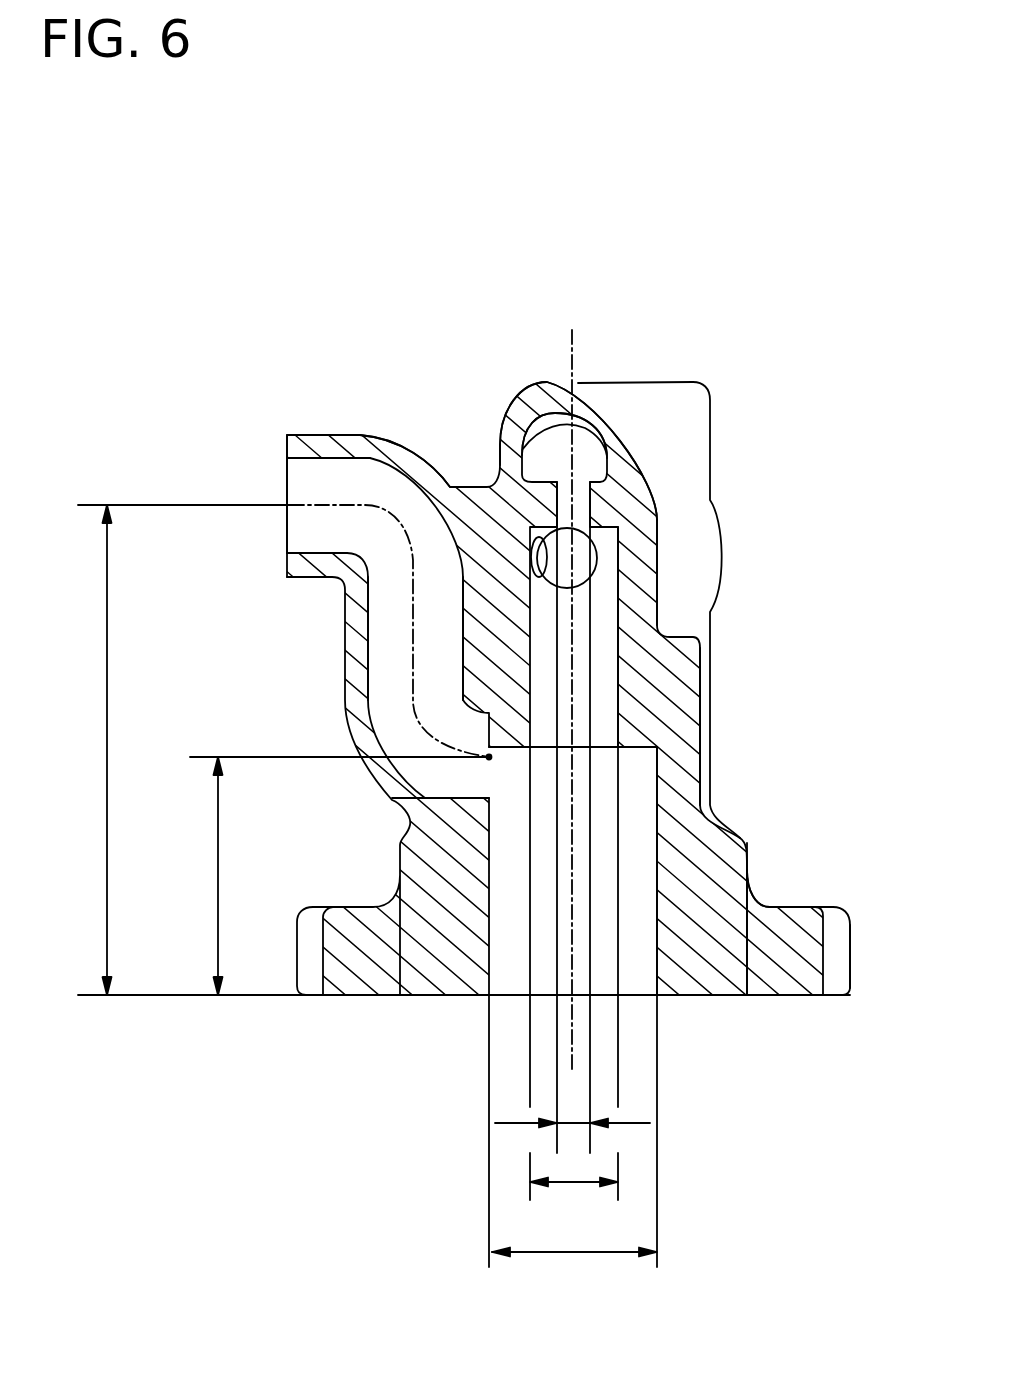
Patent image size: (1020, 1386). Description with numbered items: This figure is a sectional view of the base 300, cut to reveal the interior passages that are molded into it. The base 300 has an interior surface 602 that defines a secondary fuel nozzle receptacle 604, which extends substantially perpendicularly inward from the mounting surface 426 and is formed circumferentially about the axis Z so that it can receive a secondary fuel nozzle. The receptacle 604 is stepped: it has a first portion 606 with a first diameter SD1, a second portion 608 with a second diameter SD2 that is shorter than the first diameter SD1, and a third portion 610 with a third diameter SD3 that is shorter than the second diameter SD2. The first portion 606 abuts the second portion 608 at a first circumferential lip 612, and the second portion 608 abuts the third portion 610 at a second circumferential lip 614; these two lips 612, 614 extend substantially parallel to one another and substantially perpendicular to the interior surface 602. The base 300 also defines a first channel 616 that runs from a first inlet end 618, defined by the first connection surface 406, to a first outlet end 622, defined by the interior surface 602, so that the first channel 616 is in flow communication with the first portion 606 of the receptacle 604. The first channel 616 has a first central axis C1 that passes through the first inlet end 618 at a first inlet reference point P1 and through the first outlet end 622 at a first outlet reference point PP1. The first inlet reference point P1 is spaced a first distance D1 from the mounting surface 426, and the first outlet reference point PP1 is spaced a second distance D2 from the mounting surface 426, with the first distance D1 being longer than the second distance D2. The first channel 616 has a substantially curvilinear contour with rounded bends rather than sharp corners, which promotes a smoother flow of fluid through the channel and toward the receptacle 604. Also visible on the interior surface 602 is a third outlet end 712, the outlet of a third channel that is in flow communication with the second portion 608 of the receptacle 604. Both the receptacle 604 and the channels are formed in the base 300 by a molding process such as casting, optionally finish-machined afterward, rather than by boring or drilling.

The base 300 is at (333, 226).
The first connection surface 406 is at (262, 437).
The mounting surface 426 is at (718, 997).
The interior surface 602 is at (650, 842).
The secondary fuel nozzle receptacle 604 is at (508, 922).
The first portion 606 is at (670, 893).
The second portion 608 is at (632, 652).
The third portion 610 is at (597, 500).
The first circumferential lip 612 is at (640, 758).
The second circumferential lip 614 is at (655, 530).
The first channel 616 is at (382, 648).
The first inlet end 618 is at (275, 540).
The first outlet end 622 is at (475, 779).
The third outlet end 712 is at (584, 578).
The first central axis C1 is at (409, 452).
The first inlet reference point P1 is at (287, 505).
The first outlet reference point PP1 is at (489, 757).
The first distance D1 is at (111, 750).
The second distance D2 is at (217, 876).
The first diameter SD1 is at (572, 1256).
The second diameter SD2 is at (572, 1186).
The third diameter SD3 is at (573, 1123).
The axis Z is at (573, 677).